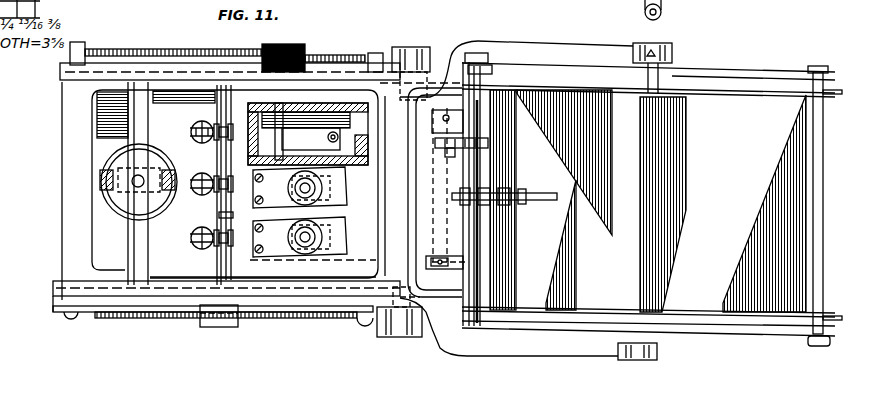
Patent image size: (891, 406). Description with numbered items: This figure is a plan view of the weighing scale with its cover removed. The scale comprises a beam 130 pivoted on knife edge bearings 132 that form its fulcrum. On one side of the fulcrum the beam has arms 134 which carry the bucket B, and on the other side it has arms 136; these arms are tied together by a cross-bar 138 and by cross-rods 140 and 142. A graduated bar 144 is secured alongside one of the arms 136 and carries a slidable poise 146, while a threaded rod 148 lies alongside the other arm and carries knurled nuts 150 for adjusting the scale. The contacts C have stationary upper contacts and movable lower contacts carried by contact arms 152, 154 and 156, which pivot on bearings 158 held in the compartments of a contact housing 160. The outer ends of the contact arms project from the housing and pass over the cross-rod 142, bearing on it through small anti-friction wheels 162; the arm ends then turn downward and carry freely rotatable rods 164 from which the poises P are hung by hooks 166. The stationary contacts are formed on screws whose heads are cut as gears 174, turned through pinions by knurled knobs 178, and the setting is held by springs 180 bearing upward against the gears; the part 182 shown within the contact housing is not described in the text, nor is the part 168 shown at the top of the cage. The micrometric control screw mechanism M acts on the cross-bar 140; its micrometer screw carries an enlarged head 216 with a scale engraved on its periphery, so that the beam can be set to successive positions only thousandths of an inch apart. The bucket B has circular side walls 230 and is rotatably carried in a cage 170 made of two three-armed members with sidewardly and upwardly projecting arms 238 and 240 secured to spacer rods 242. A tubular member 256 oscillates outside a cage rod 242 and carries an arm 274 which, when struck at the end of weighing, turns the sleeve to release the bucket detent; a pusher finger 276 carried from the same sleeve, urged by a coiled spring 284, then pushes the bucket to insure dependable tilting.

The beam 130 is at (454, 60).
The knife edge bearings 132 is at (412, 46).
The arms 134 is at (527, 46).
The arms 136 is at (165, 78).
The cross-bar 138 is at (405, 260).
The cross-rod 140 is at (132, 247).
The cross-rod 142 is at (218, 258).
The graduated bar 144 is at (294, 318).
The slidable poise 146 is at (213, 327).
The threaded rod 148 is at (118, 50).
The knurled nuts 150 is at (279, 46).
The contact arm 152 is at (317, 127).
The contact arm 154 is at (241, 182).
The contact arm 156 is at (230, 230).
The bearings 158 is at (297, 100).
The contact housing 160 is at (400, 208).
The anti-friction wheels 162 is at (209, 126).
The rotatable rods or bearings 164 is at (206, 146).
The hooks 166 is at (195, 139).
The clamp block 168 is at (672, 47).
The cage 170 is at (785, 70).
The gears 174 is at (358, 206).
The knurled knobs 178 is at (300, 212).
The springs 180 is at (272, 213).
The shaft bearing 182 is at (338, 143).
The enlarged head 216 is at (117, 204).
The side walls 230 is at (837, 93).
The arms 238 is at (582, 61).
The arms 240 is at (713, 68).
The spacer rods 242 is at (826, 228).
The tubular member 256 is at (467, 282).
The arm 274 is at (463, 109).
The pusher finger 276 is at (526, 192).
The spring 284 is at (497, 188).
The micrometric control screw mechanism M is at (117, 158).
The poises P is at (197, 128).
The contacts C is at (343, 128).
The bucket B is at (793, 152).